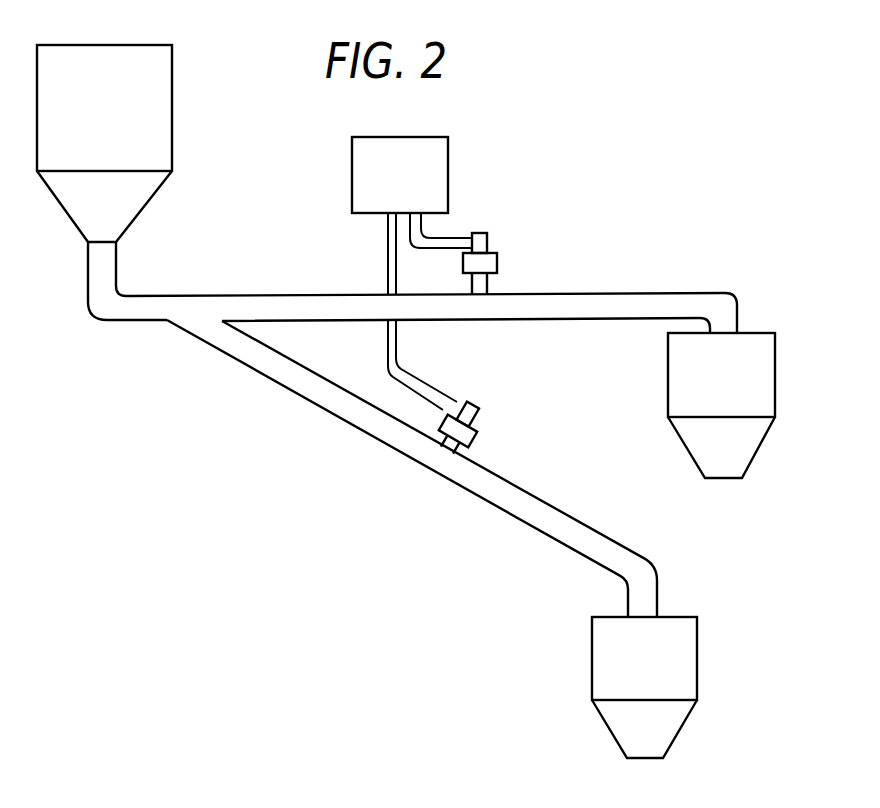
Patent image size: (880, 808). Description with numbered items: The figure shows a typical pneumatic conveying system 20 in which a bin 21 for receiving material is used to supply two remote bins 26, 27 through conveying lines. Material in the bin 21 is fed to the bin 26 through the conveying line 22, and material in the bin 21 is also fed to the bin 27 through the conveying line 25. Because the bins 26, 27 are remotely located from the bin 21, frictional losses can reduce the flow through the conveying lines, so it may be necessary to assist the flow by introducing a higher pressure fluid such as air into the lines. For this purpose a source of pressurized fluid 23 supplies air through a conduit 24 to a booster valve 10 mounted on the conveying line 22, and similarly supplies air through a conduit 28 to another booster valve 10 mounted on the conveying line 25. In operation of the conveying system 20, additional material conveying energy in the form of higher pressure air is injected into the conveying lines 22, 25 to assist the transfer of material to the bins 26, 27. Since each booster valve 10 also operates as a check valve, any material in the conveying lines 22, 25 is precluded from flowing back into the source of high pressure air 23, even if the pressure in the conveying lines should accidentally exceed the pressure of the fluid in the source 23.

The booster valve 10 is at (497, 262).
The conveying system 20 is at (477, 97).
The bin 21 is at (172, 82).
The conveying line 22 is at (254, 295).
The source of pressurized fluid 23 is at (448, 153).
The conduit 24 is at (445, 233).
The conveying line 25 is at (307, 405).
The bin 26 is at (777, 368).
The bin 27 is at (697, 645).
The conduit 28 is at (394, 359).